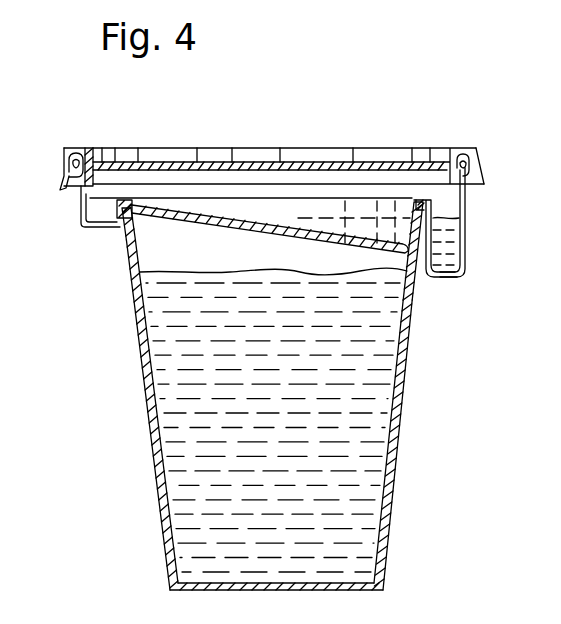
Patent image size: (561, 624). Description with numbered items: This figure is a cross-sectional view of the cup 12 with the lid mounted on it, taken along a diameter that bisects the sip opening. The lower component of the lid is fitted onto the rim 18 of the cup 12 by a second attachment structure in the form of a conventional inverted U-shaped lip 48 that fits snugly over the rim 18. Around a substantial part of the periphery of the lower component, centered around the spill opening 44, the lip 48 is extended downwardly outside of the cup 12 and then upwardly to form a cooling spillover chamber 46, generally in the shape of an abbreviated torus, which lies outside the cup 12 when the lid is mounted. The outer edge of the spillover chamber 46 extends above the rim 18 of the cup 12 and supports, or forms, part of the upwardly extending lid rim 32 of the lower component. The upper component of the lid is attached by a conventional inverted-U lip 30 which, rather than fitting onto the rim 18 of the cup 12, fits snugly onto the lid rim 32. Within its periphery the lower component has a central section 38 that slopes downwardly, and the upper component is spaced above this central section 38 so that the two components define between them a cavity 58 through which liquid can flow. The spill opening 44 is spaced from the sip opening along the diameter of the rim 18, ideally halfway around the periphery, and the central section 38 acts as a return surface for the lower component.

The cup 12 is at (134, 338).
The rim 18 is at (121, 230).
The inverted-U lip 30 is at (73, 150).
The lid rim 32 is at (80, 196).
The central section 38 is at (213, 221).
The spill opening 44 is at (405, 262).
The spillover chamber 46 is at (460, 278).
The inverted U-shaped lip 48 is at (127, 201).
The cavity 58 is at (272, 178).